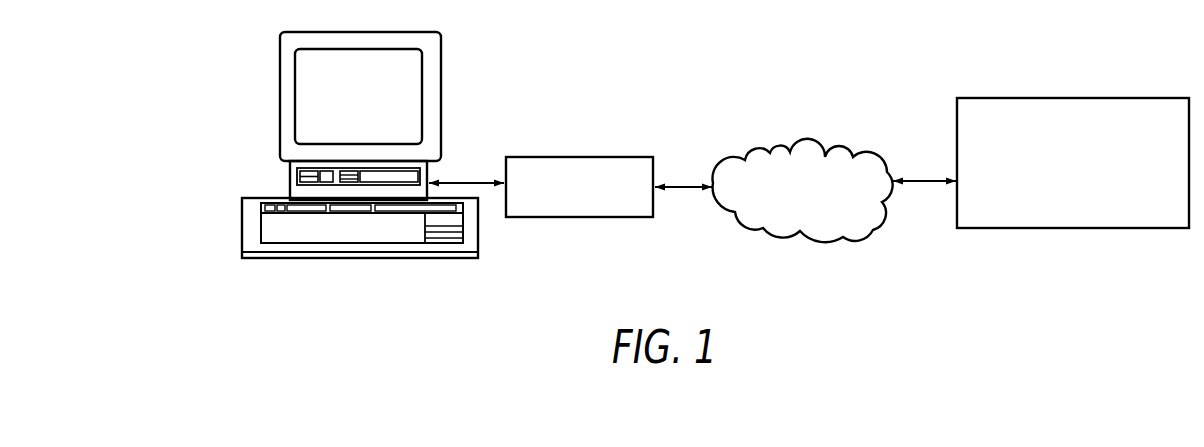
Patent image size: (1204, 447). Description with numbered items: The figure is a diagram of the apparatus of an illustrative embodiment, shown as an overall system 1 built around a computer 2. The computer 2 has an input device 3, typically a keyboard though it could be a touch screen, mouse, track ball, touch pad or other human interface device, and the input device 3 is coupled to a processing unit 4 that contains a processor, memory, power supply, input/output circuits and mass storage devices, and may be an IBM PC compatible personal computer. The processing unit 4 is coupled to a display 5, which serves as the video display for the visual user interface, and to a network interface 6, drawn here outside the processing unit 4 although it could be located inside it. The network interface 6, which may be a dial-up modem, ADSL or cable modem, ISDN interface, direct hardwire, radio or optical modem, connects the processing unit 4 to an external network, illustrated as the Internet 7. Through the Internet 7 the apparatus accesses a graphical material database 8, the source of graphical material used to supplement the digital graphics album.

The image retrieval system 1 is at (810, 258).
The computer 2 is at (240, 71).
The input device 3 is at (479, 227).
The processing unit 4 is at (290, 182).
The display 5 is at (441, 72).
The network interface 6 is at (578, 157).
The Internet 7 is at (800, 140).
The graphical material database 8 is at (1037, 98).